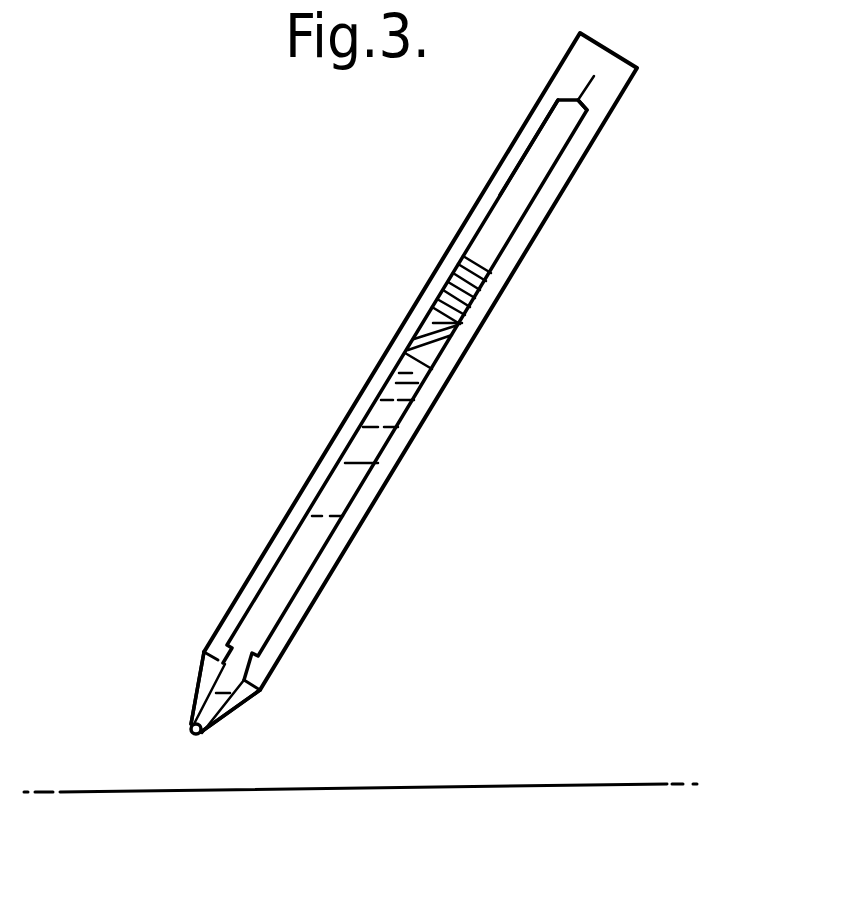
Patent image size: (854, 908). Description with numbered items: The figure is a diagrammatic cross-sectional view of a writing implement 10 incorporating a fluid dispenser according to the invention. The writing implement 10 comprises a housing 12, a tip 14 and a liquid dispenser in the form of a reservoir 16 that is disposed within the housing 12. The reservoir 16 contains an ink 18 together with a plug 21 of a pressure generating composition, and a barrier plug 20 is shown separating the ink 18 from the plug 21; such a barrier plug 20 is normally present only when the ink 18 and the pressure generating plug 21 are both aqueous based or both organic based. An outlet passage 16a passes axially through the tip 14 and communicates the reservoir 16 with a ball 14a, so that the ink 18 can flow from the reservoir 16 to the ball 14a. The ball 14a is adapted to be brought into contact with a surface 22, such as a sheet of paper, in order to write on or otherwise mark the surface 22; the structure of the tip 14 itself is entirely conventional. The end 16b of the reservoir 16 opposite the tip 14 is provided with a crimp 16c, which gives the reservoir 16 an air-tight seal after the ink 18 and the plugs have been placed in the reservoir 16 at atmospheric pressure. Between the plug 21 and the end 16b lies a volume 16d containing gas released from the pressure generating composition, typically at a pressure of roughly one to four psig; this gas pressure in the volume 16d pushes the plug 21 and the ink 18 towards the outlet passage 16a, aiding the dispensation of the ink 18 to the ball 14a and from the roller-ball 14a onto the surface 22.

The writing implement 10 is at (340, 342).
The housing 12 is at (500, 297).
The tip 14 is at (232, 725).
The ball 14a is at (190, 728).
The reservoir 16 is at (362, 497).
The outlet passage 16a is at (233, 694).
The end of the reservoir 16b is at (583, 103).
The crimp 16c is at (596, 80).
The volume 16d is at (515, 220).
The ink 18 is at (285, 573).
The barrier plug 20 is at (432, 358).
The plug of pressure generating composition 21 is at (450, 272).
The surface 22 is at (498, 783).